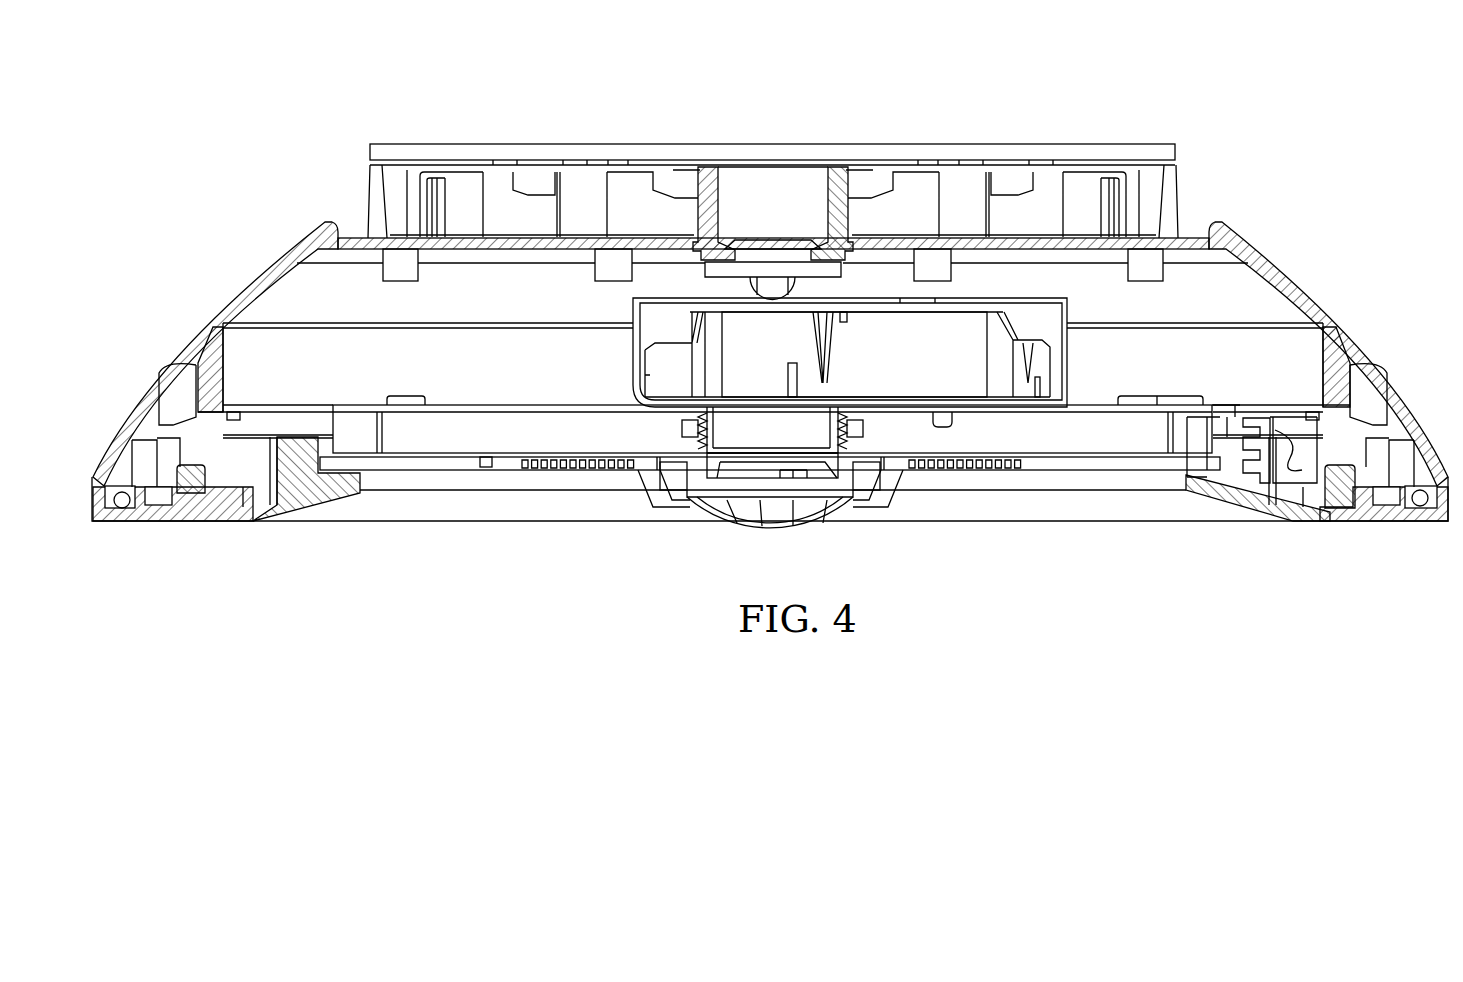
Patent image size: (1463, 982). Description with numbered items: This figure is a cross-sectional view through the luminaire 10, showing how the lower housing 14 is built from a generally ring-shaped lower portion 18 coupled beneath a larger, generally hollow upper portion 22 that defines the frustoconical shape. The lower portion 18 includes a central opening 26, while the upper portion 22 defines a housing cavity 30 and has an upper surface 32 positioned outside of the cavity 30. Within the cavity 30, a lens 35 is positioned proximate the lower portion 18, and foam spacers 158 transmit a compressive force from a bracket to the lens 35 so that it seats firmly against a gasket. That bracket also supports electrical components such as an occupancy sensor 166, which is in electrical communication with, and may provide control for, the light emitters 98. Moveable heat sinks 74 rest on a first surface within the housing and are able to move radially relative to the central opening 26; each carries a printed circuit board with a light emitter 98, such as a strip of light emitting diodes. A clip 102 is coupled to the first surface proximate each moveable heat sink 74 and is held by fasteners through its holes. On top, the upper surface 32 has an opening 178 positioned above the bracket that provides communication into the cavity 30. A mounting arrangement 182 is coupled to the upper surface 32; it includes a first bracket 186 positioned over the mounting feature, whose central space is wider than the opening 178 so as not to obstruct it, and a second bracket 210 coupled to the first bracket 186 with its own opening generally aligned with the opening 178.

The luminaire 10 is at (178, 70).
The lower housing 14 is at (178, 236).
The lower portion 18 is at (160, 525).
The upper portion 22 is at (215, 308).
The central opening 26 is at (546, 487).
The housing cavity 30 is at (253, 507).
The upper surface 32 is at (640, 230).
The lens 35 is at (1122, 460).
The moveable heat sink 74 is at (1246, 492).
The light emitter 98 is at (932, 467).
The clip 102 is at (1296, 454).
The spacer 158 is at (472, 430).
The occupancy sensor 166 is at (760, 523).
The opening 178 is at (718, 207).
The mounting arrangement 182 is at (1200, 148).
The first bracket 186 is at (380, 168).
The second bracket 210 is at (1082, 143).